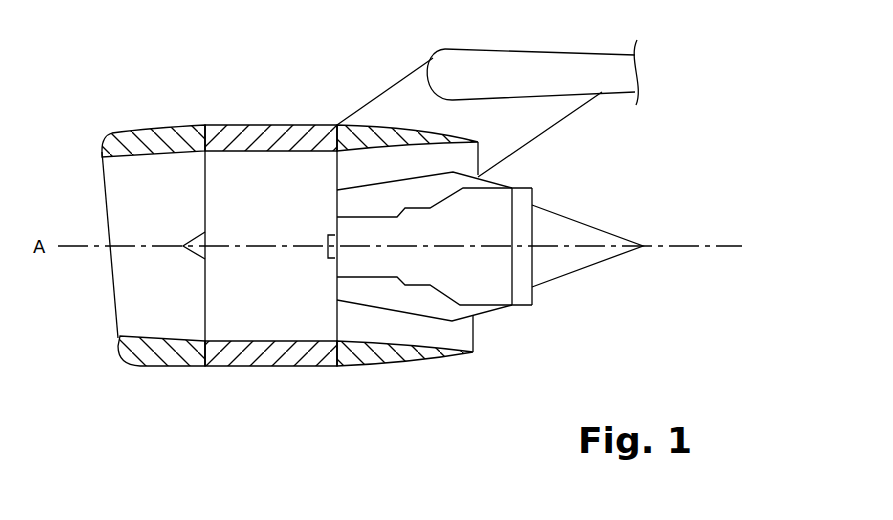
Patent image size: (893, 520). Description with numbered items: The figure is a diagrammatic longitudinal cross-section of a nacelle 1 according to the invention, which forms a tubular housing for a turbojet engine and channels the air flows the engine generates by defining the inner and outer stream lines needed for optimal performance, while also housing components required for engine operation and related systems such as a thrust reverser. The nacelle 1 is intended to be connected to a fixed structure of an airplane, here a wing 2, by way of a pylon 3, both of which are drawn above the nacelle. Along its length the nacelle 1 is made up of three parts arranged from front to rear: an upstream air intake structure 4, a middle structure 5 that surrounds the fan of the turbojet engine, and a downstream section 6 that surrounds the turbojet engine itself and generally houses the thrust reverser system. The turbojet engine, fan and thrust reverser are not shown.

The nacelle 1 is at (372, 222).
The wing 2 is at (518, 83).
The pylon 3 is at (500, 129).
The upstream air intake structure 4 is at (160, 132).
The middle structure 5 is at (262, 131).
The downstream section 6 is at (360, 366).